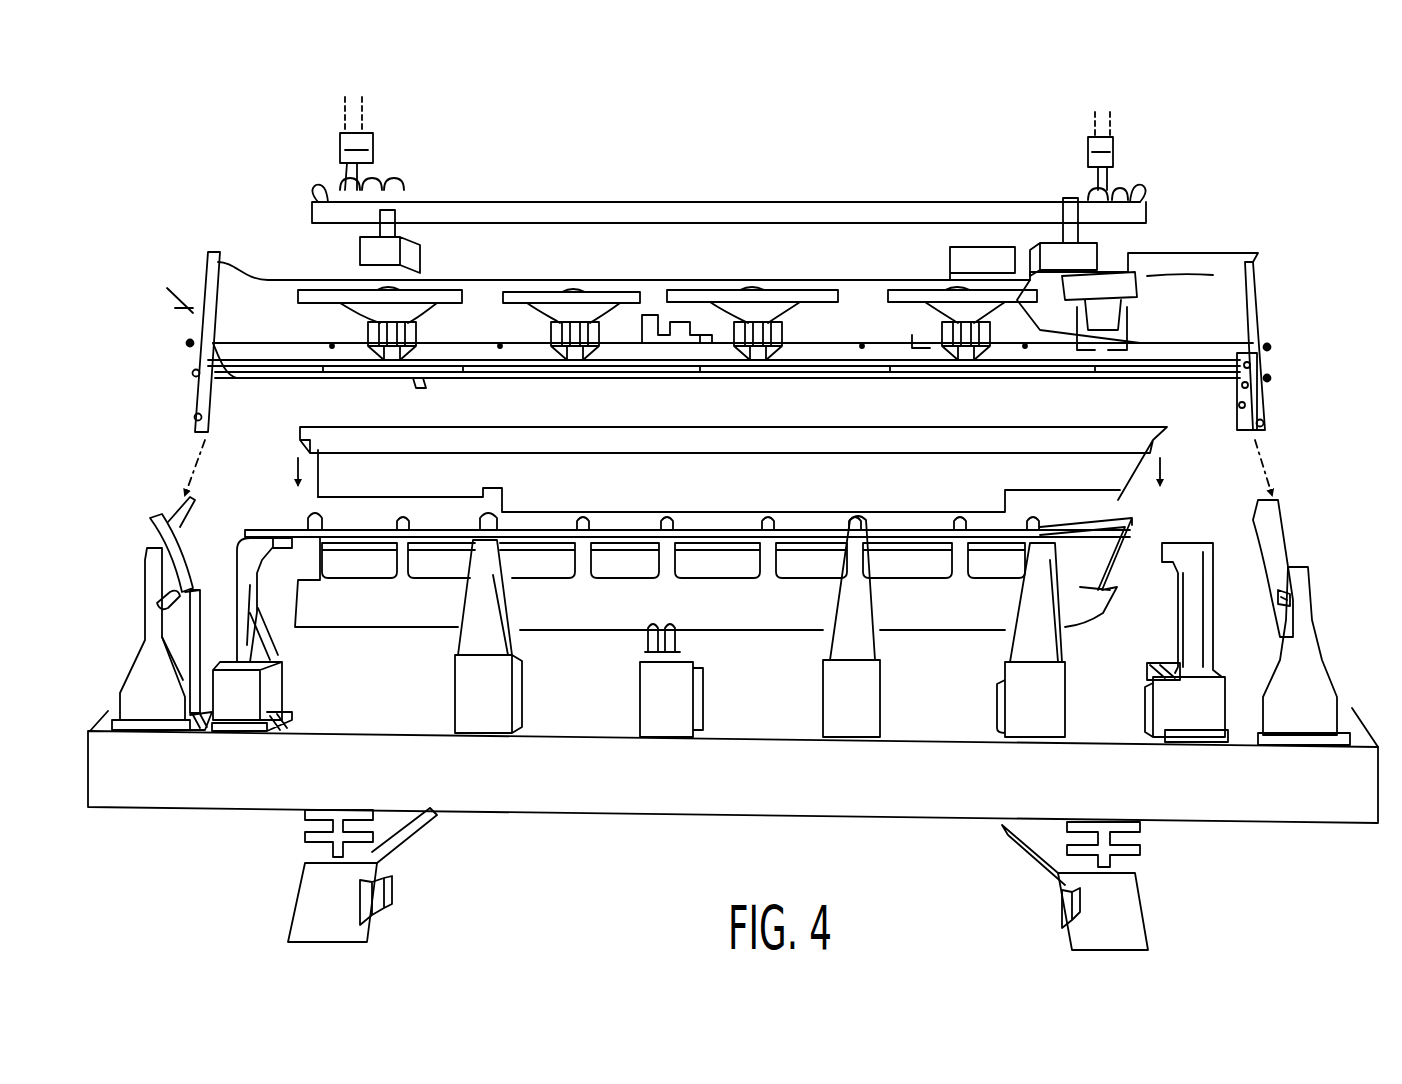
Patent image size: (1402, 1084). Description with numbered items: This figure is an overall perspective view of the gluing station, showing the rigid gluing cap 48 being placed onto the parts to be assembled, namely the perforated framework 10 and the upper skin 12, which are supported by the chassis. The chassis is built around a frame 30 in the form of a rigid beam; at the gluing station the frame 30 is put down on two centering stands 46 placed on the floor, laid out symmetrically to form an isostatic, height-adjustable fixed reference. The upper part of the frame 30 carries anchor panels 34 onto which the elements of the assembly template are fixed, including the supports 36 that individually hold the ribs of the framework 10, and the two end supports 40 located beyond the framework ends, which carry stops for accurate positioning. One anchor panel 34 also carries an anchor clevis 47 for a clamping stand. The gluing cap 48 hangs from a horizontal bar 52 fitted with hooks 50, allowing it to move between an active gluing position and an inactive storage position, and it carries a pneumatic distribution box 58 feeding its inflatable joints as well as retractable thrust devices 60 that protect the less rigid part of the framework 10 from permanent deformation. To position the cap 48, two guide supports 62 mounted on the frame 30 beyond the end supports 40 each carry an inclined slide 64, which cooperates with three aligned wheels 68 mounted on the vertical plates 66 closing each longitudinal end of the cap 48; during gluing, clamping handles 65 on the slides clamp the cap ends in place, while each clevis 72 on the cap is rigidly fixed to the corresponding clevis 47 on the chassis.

The perforated framework 10 is at (582, 633).
The upper skin 12 is at (1037, 423).
The frame 30 is at (615, 800).
The anchor panels 34 is at (458, 680).
The supports 36 is at (872, 681).
The end supports 40 is at (237, 548).
The centering stands 46 is at (303, 899).
The anchor clevis 47 is at (670, 642).
The rigid gluing cap 48 is at (1215, 243).
The hooks 50 is at (383, 200).
The horizontal bar 52 is at (620, 207).
The pneumatic distribution box 58 is at (967, 253).
The retractable thrust devices 60 is at (537, 296).
The guide supports 62 is at (137, 673).
The inclined slide 64 is at (160, 530).
The clamping handles 65 is at (157, 607).
The vertical plates 66 is at (218, 265).
The wheels 68 is at (198, 417).
The clevis 72 is at (657, 313).